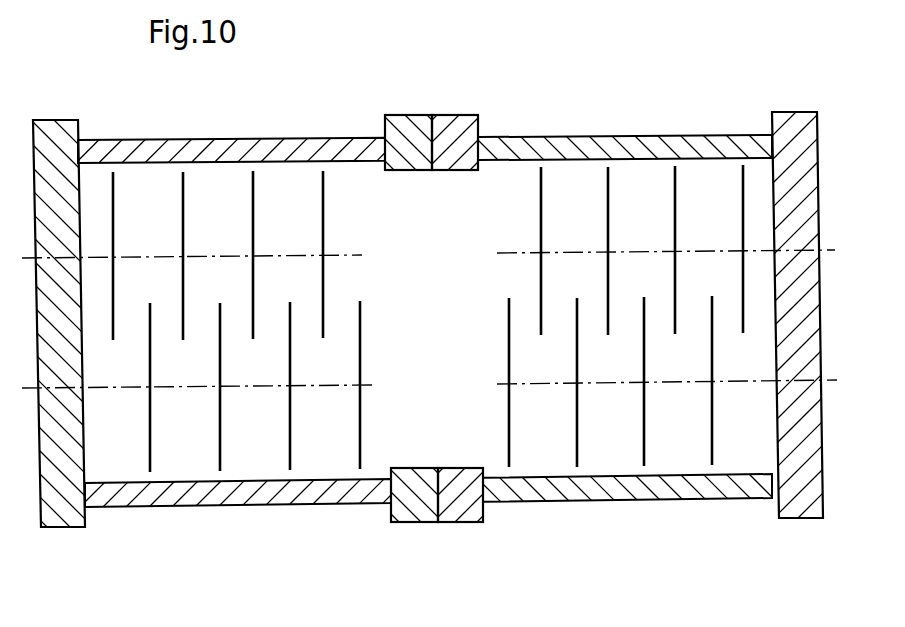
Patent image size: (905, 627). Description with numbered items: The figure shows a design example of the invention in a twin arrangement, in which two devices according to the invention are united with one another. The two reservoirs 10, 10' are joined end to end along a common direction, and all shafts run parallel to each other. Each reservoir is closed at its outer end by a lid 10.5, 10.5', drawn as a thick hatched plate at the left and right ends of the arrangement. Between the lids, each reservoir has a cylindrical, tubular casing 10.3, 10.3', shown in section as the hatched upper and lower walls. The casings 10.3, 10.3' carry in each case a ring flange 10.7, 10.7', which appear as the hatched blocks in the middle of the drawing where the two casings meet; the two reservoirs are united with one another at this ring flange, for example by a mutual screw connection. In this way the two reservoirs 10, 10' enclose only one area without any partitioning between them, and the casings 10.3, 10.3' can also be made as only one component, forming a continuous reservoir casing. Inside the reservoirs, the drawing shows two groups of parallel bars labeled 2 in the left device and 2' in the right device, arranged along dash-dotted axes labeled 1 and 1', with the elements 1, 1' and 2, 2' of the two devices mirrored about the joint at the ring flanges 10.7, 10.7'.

The reservoir 10 is at (230, 336).
The reservoir 10' is at (639, 333).
The electrode arrangement axis 1 is at (197, 321).
The second electrode arrangement axis 1' is at (667, 321).
The electrodes 2 is at (236, 326).
The second electrodes 2' is at (626, 316).
The cylindrical, tubular casing 10.3 is at (234, 292).
The cylindrical, tubular casing 10.3' is at (625, 280).
The lid 10.5 is at (61, 359).
The lid 10.5' is at (809, 280).
The ring flange 10.7 is at (410, 357).
The ring flange 10.7' is at (471, 354).